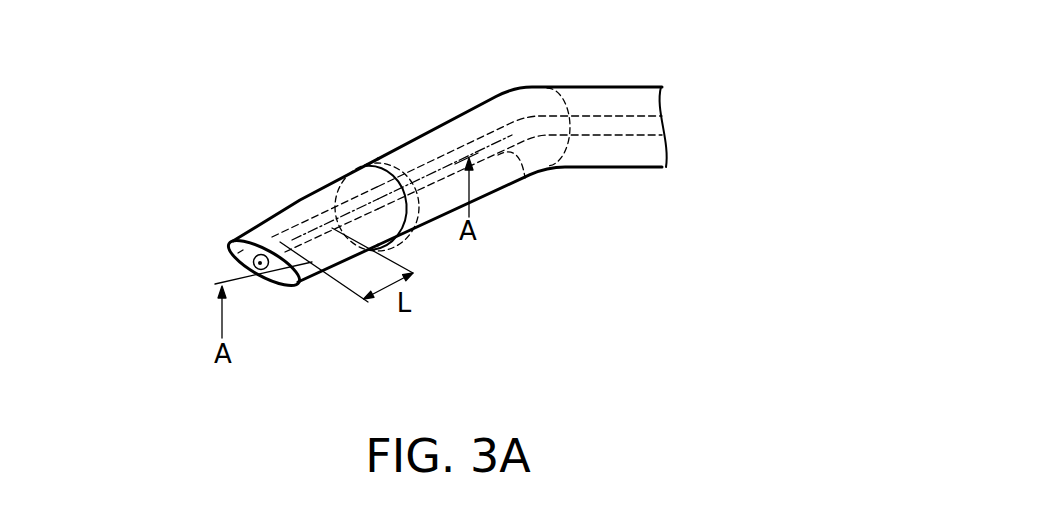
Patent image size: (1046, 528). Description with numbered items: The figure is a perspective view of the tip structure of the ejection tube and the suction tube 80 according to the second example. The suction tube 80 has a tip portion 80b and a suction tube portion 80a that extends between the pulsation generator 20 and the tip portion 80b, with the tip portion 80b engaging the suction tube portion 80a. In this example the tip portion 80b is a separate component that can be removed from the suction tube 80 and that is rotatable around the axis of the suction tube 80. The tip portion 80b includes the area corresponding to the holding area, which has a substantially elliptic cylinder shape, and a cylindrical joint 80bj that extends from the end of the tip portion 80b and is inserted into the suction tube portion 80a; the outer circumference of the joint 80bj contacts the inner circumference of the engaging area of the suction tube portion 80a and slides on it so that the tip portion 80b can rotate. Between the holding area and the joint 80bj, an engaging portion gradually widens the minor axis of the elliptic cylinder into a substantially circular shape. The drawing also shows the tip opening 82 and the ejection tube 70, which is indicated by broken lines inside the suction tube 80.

The suction tube 80 is at (240, 150).
The suction tube portion 80a is at (413, 140).
The tip portion 80b is at (375, 148).
The joint 80bj is at (416, 206).
The tip opening 82 is at (232, 258).
The inner tube 70 is at (525, 178).
The pulsation generator 20 is at (697, 127).